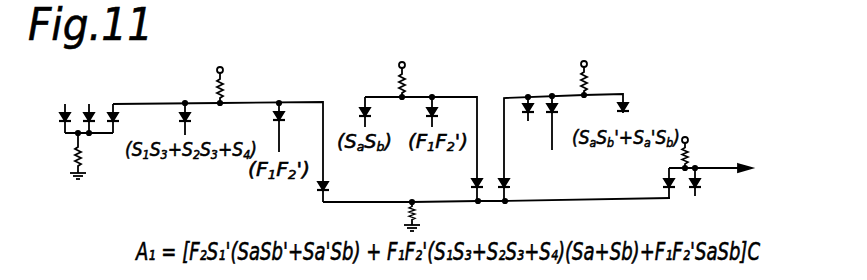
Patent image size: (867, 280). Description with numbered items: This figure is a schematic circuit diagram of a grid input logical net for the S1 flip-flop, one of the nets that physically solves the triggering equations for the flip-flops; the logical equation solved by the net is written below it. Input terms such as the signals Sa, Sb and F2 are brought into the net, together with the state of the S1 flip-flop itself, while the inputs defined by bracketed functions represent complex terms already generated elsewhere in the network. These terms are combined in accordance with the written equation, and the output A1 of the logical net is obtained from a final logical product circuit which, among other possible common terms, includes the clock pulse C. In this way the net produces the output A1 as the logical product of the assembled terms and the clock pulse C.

The Sa input signal Sa is at (64, 107).
The Sb input signal Sb is at (92, 107).
The F2 input signal F2 is at (524, 123).
The S1 flip-flop S1 is at (551, 136).
The A1 output A1 is at (723, 172).
The clock pulse C is at (694, 192).